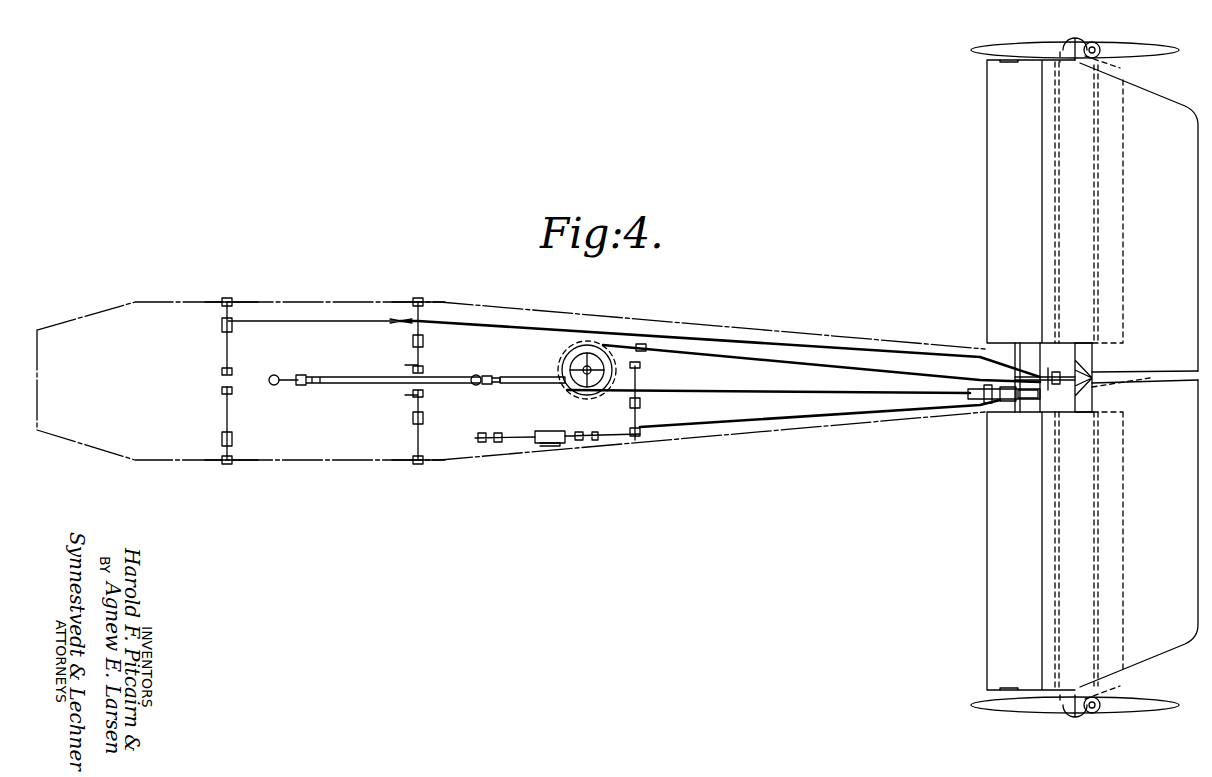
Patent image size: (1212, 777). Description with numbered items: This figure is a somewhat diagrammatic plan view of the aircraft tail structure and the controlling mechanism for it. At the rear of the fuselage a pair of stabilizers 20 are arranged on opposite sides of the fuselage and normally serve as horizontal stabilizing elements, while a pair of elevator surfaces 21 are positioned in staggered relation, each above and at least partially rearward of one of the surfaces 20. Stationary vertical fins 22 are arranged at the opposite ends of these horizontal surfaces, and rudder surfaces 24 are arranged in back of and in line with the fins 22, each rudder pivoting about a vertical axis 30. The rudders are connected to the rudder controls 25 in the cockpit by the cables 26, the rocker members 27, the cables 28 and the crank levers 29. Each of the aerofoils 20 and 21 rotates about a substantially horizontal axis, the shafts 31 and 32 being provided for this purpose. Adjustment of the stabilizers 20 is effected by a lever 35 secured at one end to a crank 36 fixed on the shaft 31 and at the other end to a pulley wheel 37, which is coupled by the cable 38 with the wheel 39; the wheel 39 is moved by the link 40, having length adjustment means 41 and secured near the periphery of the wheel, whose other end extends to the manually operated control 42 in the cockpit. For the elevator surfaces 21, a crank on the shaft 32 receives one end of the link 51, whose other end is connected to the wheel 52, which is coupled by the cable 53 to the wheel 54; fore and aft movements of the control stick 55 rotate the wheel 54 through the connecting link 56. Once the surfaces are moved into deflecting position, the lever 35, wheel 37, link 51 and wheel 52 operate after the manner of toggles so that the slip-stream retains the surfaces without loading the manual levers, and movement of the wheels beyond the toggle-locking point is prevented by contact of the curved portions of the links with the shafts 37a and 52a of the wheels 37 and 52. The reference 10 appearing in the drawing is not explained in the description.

The control stick 10 is at (284, 378).
The stabilizer 20 is at (998, 203).
The elevator surface 21 is at (1168, 106).
The fin 22 is at (1027, 47).
The rudder surface 24 is at (1135, 45).
The rudder control 25 is at (420, 340).
The cable 26 is at (756, 338).
The rocker member 27 is at (1094, 373).
The cable 28 is at (1057, 262).
The crank lever 29 is at (1078, 40).
The vertical axis 30 is at (1114, 377).
The shaft 31 is at (1022, 344).
The shaft 32 is at (1070, 343).
The lever 35 is at (1030, 400).
The crank 36 is at (1009, 401).
The pulley wheel 37 is at (985, 402).
The shaft 37a is at (955, 401).
The cable 38 is at (867, 396).
The wheel 39 is at (641, 396).
The link 40 is at (611, 437).
The length adjustment means 41 is at (562, 442).
The manually operated control 42 is at (514, 440).
The link 51 is at (1072, 405).
The wheel 52 is at (1047, 375).
The shaft 52a is at (1092, 390).
The cable 53 is at (946, 374).
The wheel 54 is at (590, 355).
The control stick 55 is at (486, 376).
The connecting link 56 is at (527, 377).